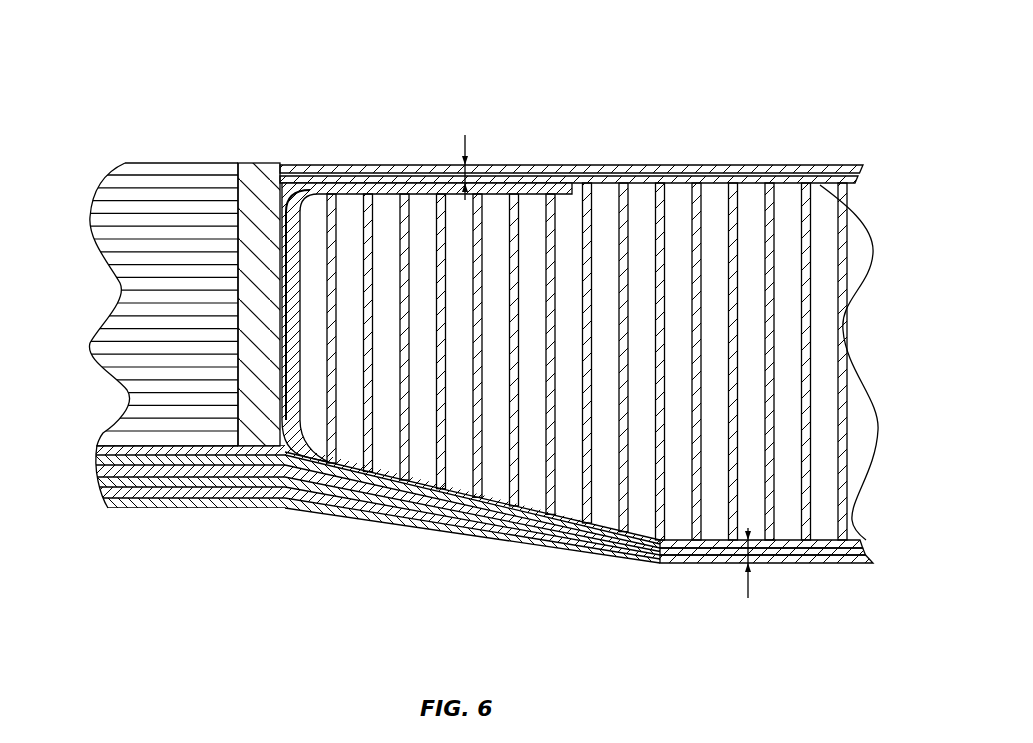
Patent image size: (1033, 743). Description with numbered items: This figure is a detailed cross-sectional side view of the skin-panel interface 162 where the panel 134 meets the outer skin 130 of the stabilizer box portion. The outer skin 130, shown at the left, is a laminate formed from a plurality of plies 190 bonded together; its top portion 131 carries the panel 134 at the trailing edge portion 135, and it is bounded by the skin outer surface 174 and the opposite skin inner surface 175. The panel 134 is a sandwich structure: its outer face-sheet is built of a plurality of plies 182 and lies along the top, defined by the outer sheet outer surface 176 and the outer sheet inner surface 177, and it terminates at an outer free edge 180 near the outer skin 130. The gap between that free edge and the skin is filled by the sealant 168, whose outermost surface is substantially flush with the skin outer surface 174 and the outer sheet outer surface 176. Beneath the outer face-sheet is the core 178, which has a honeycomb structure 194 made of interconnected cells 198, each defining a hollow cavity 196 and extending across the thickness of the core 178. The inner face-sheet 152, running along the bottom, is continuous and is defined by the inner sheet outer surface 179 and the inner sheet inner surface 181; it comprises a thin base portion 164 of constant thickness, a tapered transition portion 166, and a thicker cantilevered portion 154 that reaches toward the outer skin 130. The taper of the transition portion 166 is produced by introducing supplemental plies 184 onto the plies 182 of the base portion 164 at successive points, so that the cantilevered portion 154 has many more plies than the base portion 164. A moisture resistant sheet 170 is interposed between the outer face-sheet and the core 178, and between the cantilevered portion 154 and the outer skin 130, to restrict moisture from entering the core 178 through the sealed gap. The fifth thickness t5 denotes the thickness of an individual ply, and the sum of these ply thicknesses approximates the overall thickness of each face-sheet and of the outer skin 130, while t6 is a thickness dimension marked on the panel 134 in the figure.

The outer skin 130 is at (188, 244).
The top portion 131 is at (232, 162).
The panel 134 is at (607, 159).
The trailing edge portion 135 is at (212, 170).
The inner face-sheet 152 is at (475, 529).
The cantilevered portion 154 is at (160, 518).
The skin-panel interface 162 is at (605, 268).
The base portion 164 is at (790, 558).
The transition portion 166 is at (471, 512).
The sealant 168 is at (255, 175).
The moisture resistant sheet 170 is at (636, 320).
The skin outer surface 174 is at (158, 168).
The skin inner surface 175 is at (97, 452).
The outer sheet outer surface 176 is at (772, 163).
The outer sheet inner surface 177 is at (817, 187).
The core 178 is at (636, 336).
The inner sheet outer surface 179 is at (819, 540).
The outer free edge 180 is at (278, 172).
The inner sheet inner surface 181 is at (830, 565).
The plies 182 is at (173, 507).
The supplemental plies 184 is at (322, 470).
The plies 190 is at (145, 183).
The honeycomb structure 194 is at (777, 428).
The hollow cavity 196 is at (788, 373).
The cells 198 is at (773, 342).
The fifth thickness t5 is at (746, 590).
The upper skin thickness t6 is at (463, 147).